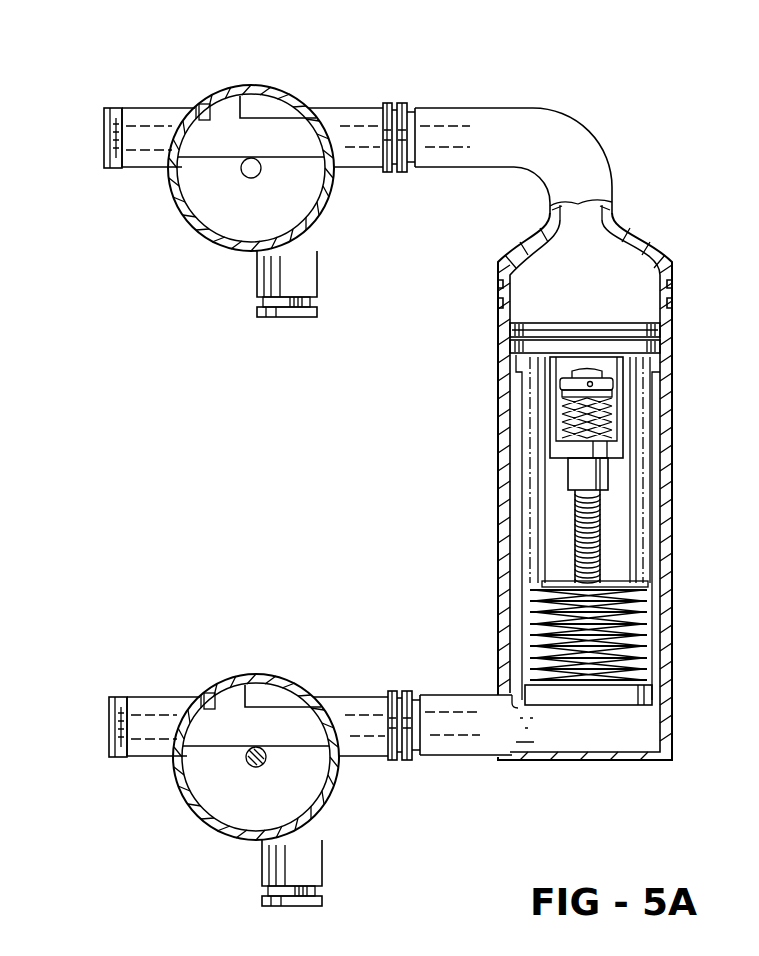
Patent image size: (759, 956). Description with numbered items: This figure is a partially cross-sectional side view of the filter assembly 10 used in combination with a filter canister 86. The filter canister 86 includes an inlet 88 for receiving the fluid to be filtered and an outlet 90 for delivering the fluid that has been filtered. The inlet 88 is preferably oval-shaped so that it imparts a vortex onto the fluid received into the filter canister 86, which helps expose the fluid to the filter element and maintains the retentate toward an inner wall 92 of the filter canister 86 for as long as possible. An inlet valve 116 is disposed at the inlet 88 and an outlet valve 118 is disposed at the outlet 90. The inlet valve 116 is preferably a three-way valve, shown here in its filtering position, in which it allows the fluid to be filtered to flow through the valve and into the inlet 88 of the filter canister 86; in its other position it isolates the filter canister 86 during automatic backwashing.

The filter assembly 10 is at (656, 200).
The outlet valve 118 is at (332, 86).
The outlet 90 is at (403, 168).
The filter canister 86 is at (665, 428).
The inner wall 92 is at (653, 586).
The inlet 88 is at (555, 705).
The inlet valve 116 is at (200, 828).